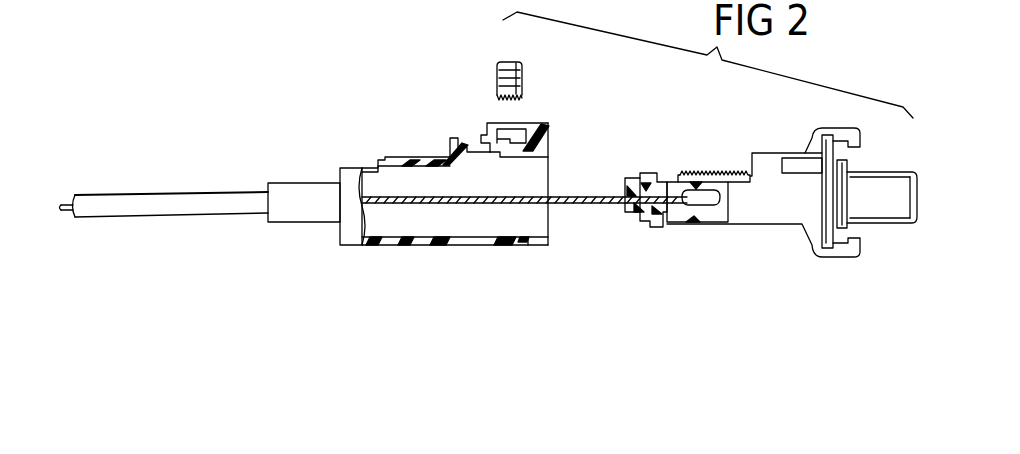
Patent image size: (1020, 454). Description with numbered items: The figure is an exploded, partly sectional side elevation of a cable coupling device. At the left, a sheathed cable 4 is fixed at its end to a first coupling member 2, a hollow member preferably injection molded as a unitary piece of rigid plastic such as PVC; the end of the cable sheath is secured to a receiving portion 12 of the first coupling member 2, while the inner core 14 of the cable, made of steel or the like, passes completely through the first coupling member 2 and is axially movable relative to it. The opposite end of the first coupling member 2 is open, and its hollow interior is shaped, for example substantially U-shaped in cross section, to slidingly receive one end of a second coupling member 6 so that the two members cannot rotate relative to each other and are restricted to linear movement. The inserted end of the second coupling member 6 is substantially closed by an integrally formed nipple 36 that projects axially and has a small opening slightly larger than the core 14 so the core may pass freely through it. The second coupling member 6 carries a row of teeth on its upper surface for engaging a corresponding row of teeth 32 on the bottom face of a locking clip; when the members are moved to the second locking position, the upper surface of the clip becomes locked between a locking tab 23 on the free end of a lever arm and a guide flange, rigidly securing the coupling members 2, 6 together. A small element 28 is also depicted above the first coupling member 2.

The first coupling member 2 is at (430, 240).
The sheathed cable 4 is at (175, 175).
The second coupling member 6 is at (740, 229).
The receiving portion 12 is at (294, 183).
The inner core 14 is at (596, 205).
The locking tab 23 is at (483, 132).
The retaining member 28 is at (535, 67).
The teeth 32 is at (522, 97).
The nipple 36 is at (650, 192).